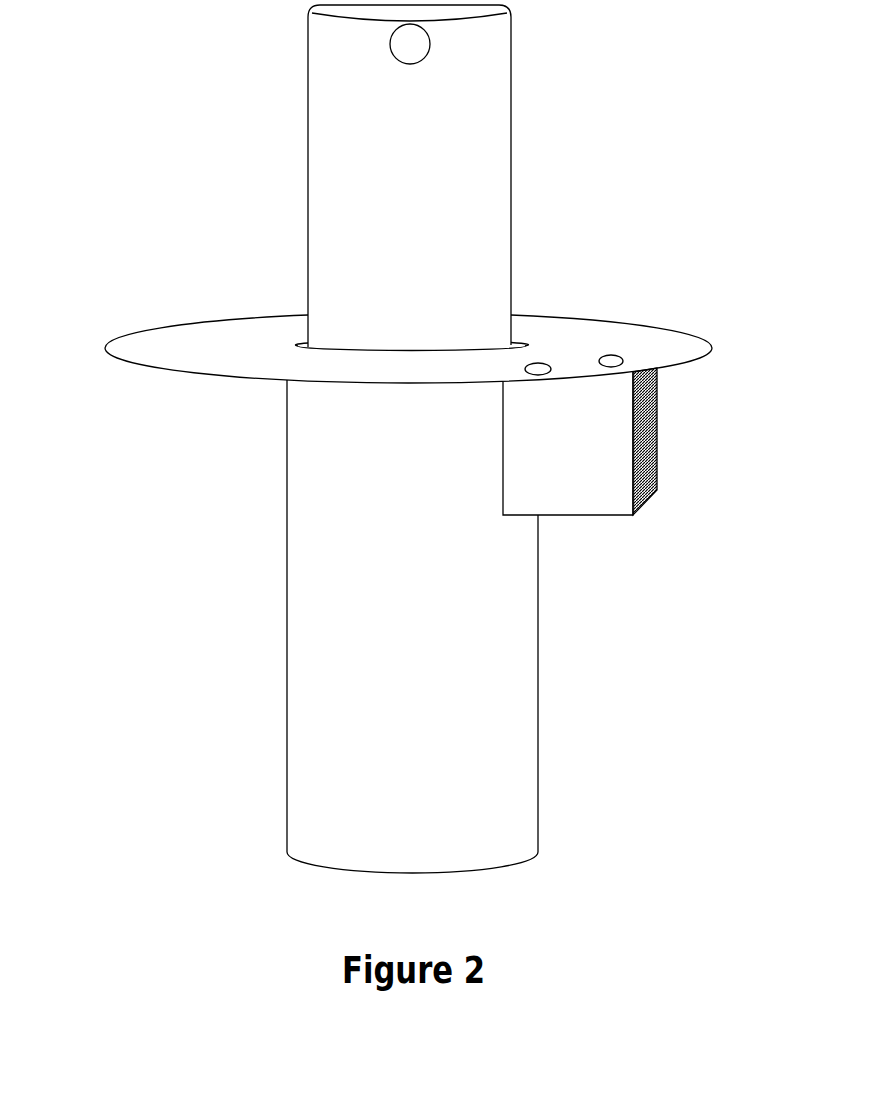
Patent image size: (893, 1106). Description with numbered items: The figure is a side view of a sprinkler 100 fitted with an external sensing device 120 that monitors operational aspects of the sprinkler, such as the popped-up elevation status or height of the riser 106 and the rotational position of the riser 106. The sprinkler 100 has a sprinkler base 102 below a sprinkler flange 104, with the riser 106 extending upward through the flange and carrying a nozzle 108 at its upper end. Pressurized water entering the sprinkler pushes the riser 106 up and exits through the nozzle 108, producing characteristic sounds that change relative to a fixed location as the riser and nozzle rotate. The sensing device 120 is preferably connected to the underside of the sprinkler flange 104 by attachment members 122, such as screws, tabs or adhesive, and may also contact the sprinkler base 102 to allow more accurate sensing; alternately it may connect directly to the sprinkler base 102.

The sprinkler 100 is at (176, 478).
The sprinkler base 102 is at (510, 683).
The sprinkler flange 104 is at (200, 363).
The riser 106 is at (327, 270).
The nozzle 108 is at (390, 56).
The external sensing device 120 is at (640, 468).
The attachment members 122 is at (602, 355).